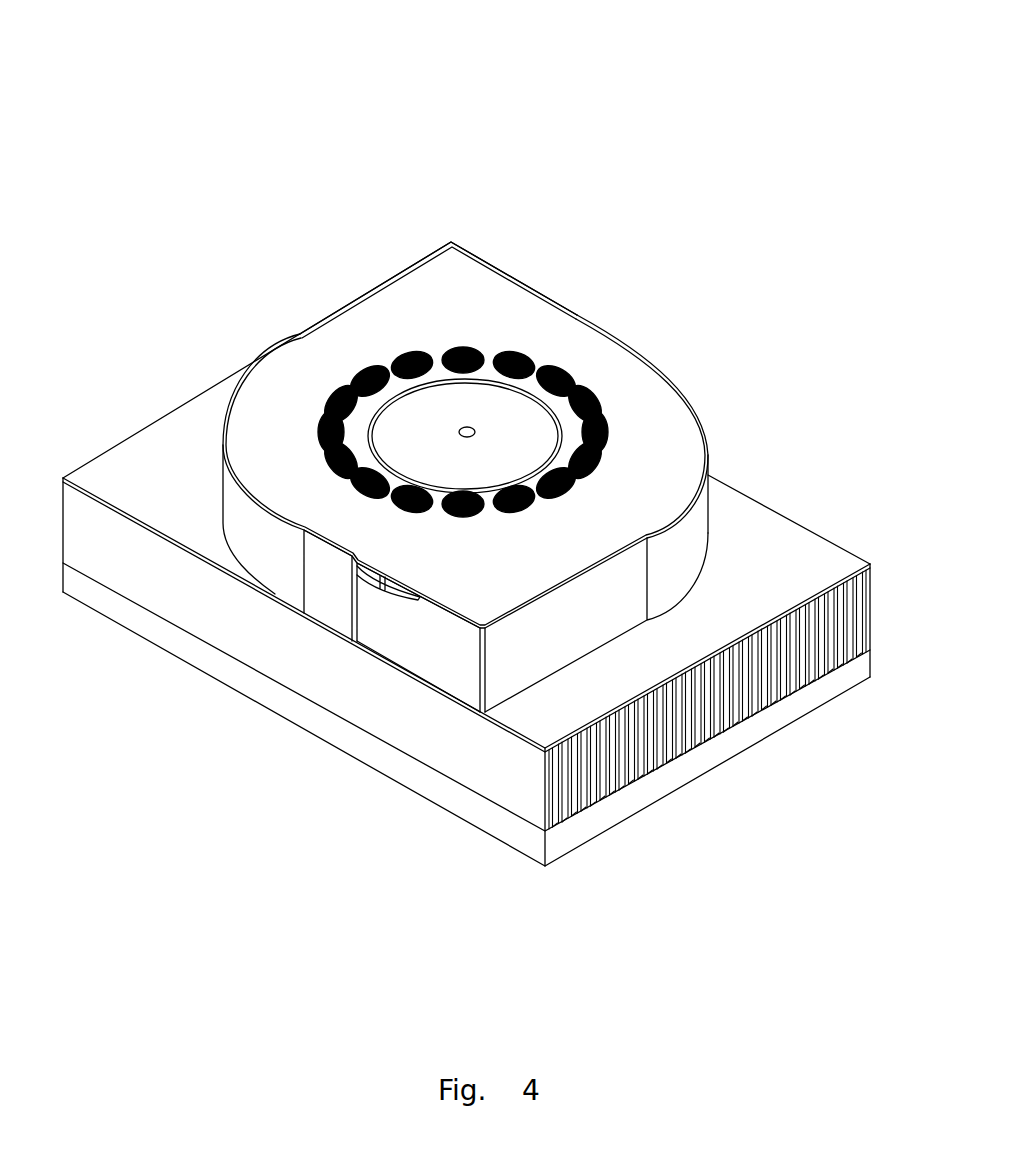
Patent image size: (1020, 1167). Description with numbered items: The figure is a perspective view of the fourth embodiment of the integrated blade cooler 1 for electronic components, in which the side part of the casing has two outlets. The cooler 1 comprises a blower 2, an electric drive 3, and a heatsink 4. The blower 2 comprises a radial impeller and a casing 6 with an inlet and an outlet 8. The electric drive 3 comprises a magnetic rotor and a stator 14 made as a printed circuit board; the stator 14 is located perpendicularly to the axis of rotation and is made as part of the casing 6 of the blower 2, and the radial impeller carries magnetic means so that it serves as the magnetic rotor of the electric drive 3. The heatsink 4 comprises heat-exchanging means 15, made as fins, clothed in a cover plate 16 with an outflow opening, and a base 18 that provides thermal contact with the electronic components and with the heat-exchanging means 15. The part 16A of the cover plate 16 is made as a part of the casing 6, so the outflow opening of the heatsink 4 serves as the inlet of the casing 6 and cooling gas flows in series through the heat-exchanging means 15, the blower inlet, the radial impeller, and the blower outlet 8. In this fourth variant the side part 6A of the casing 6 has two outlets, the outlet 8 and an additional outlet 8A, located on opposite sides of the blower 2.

The integrated blade cooler 1 is at (268, 117).
The blower 2 is at (187, 434).
The electric drive 3 is at (619, 290).
The heatsink 4 is at (164, 614).
The casing 6 is at (638, 407).
The side part of the casing 6A is at (673, 545).
The outlet 8 is at (420, 633).
The additional outlet 8A is at (525, 244).
The stator 14 is at (377, 348).
The heat-exchanging means 15 is at (757, 667).
The cover plate 16 is at (722, 490).
The part of the cover plate 16A is at (467, 687).
The base 18 is at (665, 777).